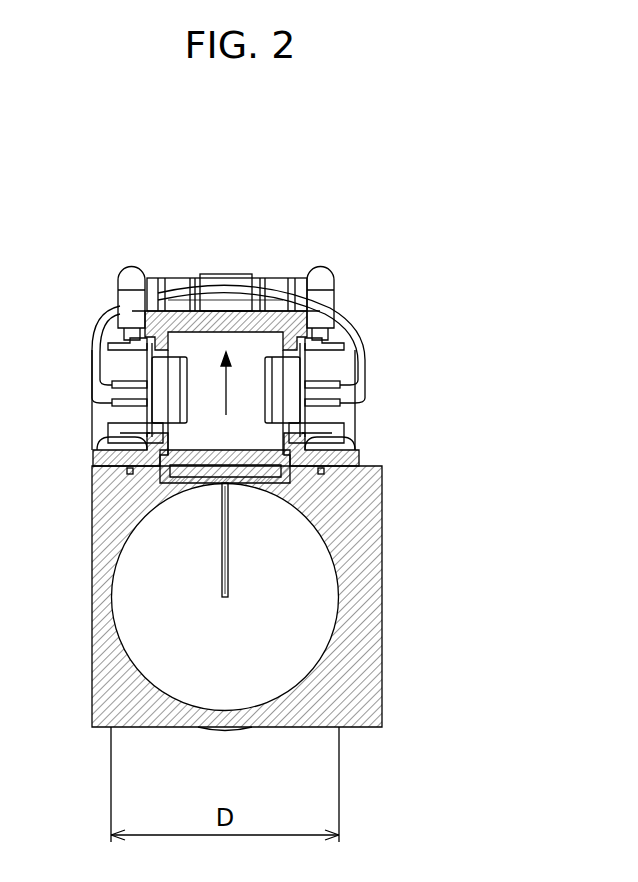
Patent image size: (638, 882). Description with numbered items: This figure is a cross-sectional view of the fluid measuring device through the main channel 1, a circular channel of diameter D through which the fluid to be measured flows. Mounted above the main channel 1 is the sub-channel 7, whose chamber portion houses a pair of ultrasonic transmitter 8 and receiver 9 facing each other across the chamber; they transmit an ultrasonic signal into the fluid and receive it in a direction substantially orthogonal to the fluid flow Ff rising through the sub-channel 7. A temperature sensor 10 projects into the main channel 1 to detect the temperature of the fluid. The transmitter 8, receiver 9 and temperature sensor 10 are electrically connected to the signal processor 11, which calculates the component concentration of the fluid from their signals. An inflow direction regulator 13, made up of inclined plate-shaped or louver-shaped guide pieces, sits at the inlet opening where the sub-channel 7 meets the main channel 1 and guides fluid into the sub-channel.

The main channel 1 is at (158, 567).
The sub-channel 7 is at (245, 360).
The ultrasonic transmitter 8 is at (285, 377).
The ultrasonic receiver 9 is at (165, 382).
The temperature sensor 10 is at (228, 560).
The signal processor 11 is at (197, 294).
The inflow direction regulator 13 is at (268, 463).